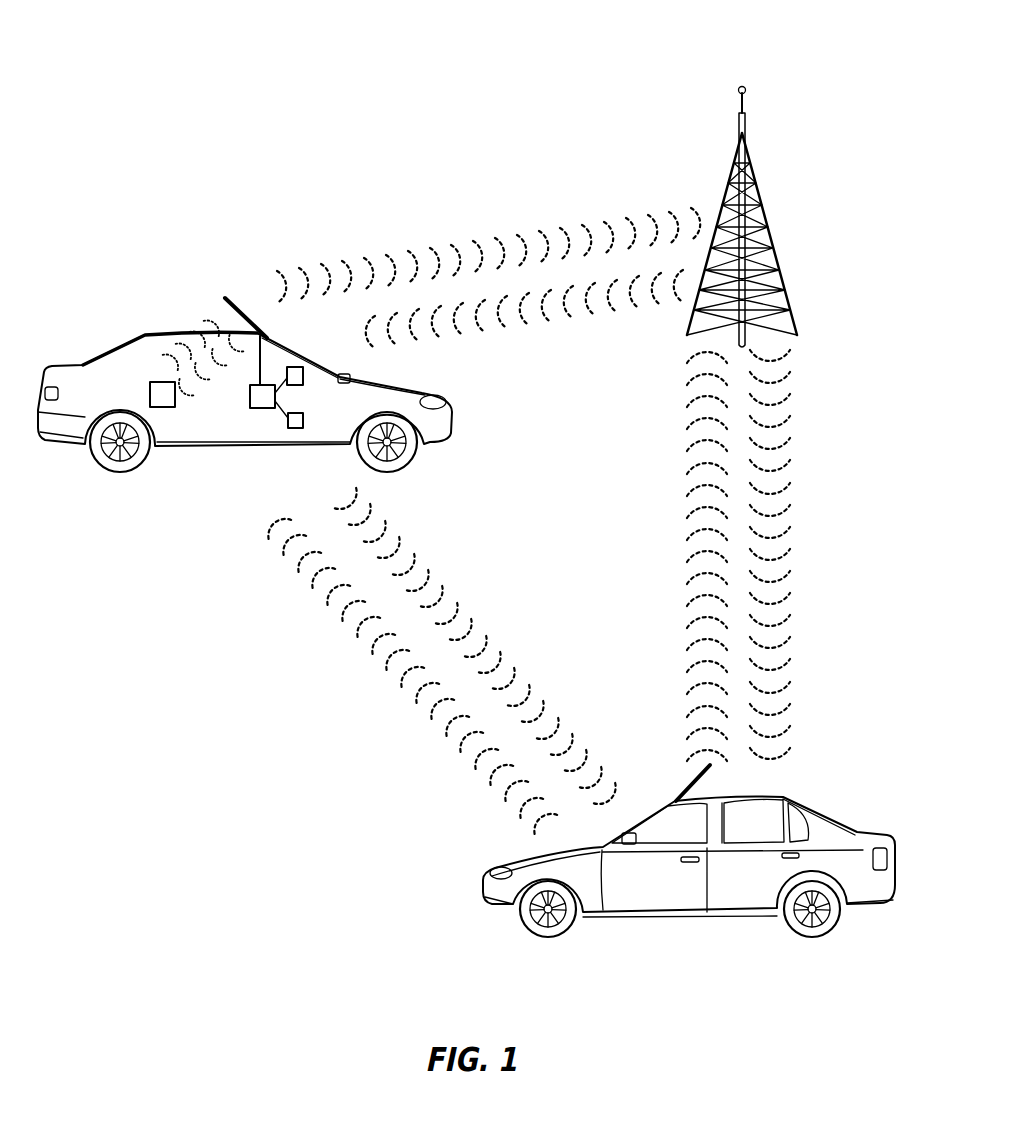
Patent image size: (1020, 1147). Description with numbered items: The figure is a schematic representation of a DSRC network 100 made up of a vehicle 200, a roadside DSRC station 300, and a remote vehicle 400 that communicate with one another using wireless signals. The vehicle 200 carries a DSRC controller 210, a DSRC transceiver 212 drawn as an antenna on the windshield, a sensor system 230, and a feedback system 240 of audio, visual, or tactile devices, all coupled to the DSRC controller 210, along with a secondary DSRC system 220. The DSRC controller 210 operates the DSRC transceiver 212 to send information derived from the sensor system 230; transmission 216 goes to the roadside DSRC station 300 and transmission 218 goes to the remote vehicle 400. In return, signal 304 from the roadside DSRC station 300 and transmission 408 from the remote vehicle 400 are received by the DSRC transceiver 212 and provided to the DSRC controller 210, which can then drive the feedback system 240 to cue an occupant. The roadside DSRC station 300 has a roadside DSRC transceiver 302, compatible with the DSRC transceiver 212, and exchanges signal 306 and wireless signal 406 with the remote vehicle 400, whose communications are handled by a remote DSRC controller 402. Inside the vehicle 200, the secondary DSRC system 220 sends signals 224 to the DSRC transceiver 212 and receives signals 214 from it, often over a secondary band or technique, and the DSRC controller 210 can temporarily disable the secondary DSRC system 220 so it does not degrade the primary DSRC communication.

The DSRC network 100 is at (256, 113).
The vehicle 200 is at (106, 320).
The DSRC controller 210 is at (258, 410).
The DSRC transceiver 212 is at (237, 300).
The signals 214 is at (205, 385).
The transmission 216 is at (437, 243).
The transmission 218 is at (490, 647).
The secondary DSRC system 220 is at (158, 408).
The signals 224 is at (177, 332).
The sensor system 230 is at (297, 428).
The feedback system 240 is at (303, 370).
The roadside DSRC station 300 is at (772, 200).
The roadside DSRC transceiver 302 is at (746, 88).
The signal 304 is at (562, 315).
The signal 306 is at (784, 515).
The remote vehicle 400 is at (689, 872).
The remote DSRC controller 402 is at (687, 783).
The wireless signal 406 is at (688, 545).
The transmission 408 is at (380, 663).